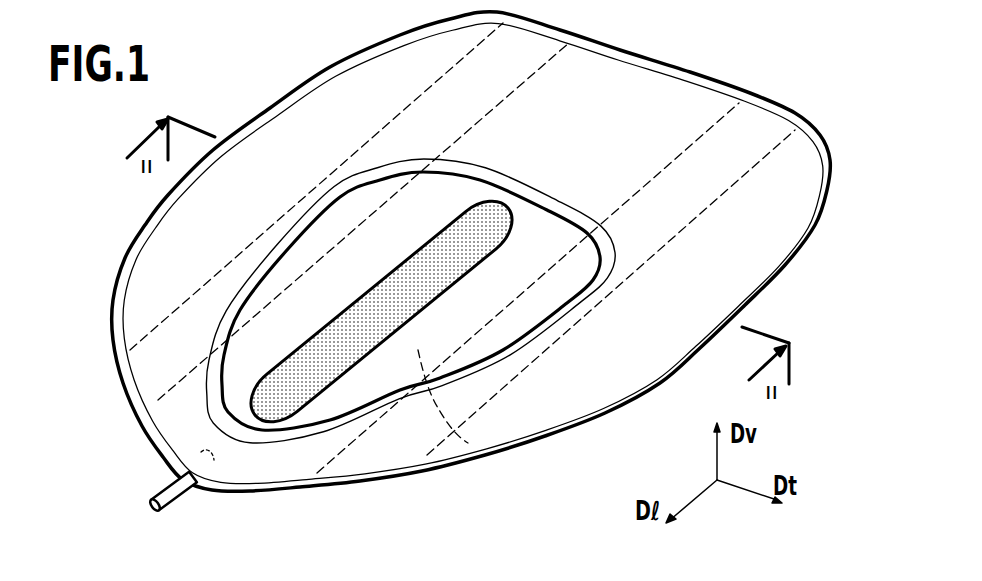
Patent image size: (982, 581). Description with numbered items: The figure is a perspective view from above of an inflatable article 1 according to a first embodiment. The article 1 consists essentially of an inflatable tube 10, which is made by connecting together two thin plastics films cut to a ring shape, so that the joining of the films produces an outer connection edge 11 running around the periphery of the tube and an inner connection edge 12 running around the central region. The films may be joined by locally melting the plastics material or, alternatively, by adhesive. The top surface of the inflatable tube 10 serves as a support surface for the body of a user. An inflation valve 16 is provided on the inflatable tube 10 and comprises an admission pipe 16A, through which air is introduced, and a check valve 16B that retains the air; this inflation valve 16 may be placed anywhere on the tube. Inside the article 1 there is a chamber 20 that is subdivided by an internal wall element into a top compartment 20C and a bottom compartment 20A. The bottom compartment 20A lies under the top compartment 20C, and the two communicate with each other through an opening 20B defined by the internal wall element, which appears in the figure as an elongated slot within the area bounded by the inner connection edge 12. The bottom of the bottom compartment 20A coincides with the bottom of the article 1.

The article 1 is at (471, 245).
The inflatable tube 10 is at (734, 84).
The outer connection edge 11 is at (304, 92).
The inner connection edge 12 is at (412, 174).
The inflation valve 16 is at (170, 468).
The admission pipe 16A is at (172, 475).
The check valve 16B is at (210, 462).
The chamber 20 is at (500, 302).
The bottom compartment 20A is at (468, 443).
The opening 20B is at (484, 233).
The top compartment 20C is at (535, 244).